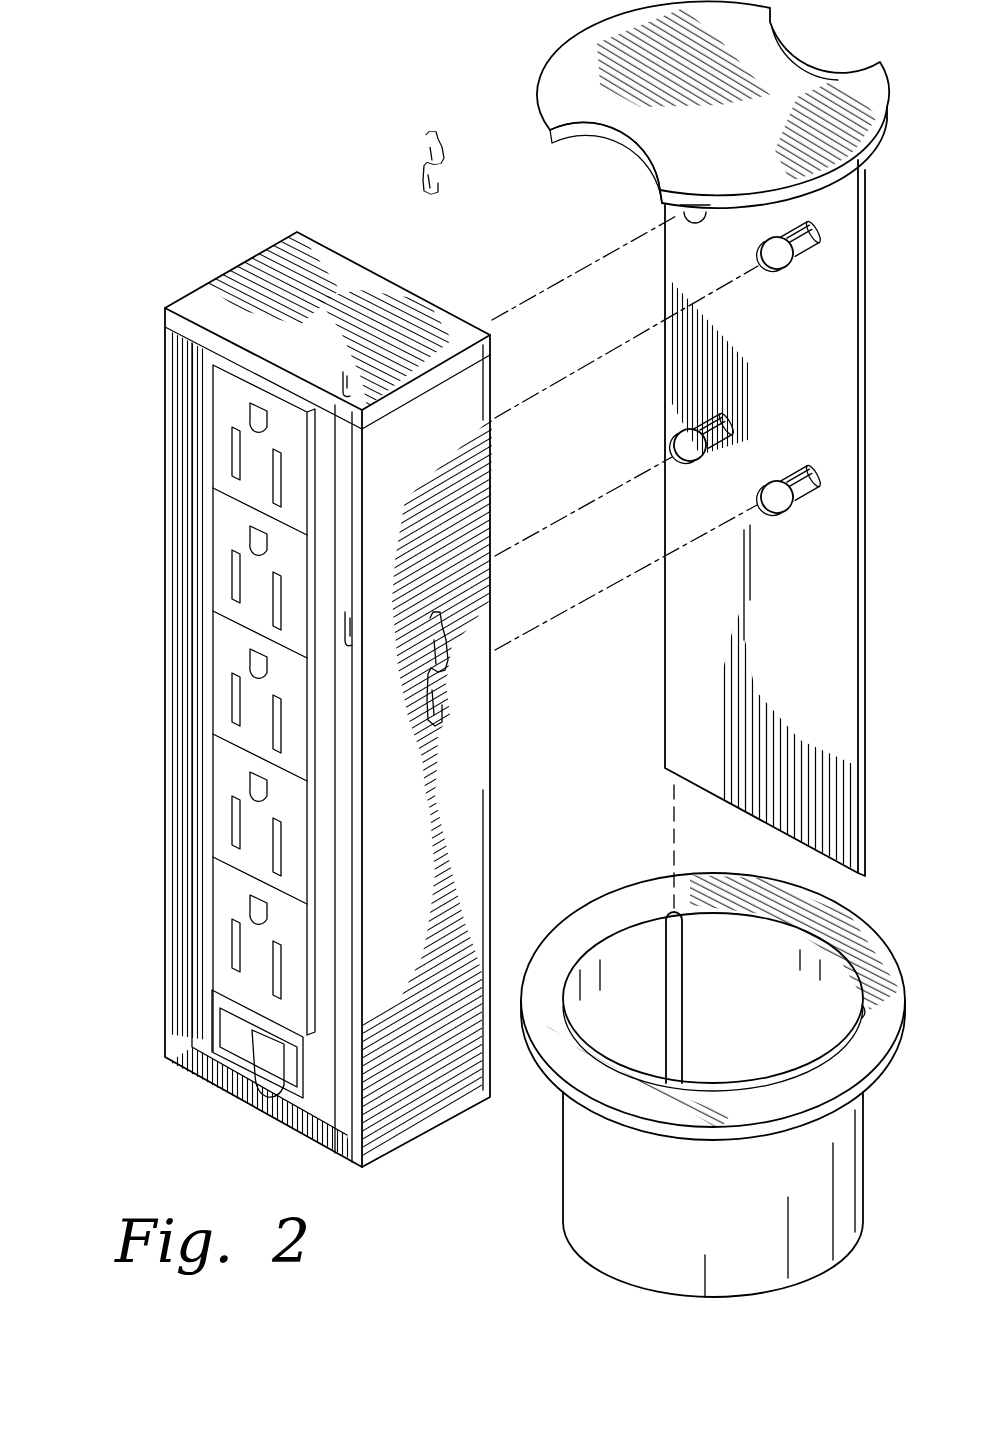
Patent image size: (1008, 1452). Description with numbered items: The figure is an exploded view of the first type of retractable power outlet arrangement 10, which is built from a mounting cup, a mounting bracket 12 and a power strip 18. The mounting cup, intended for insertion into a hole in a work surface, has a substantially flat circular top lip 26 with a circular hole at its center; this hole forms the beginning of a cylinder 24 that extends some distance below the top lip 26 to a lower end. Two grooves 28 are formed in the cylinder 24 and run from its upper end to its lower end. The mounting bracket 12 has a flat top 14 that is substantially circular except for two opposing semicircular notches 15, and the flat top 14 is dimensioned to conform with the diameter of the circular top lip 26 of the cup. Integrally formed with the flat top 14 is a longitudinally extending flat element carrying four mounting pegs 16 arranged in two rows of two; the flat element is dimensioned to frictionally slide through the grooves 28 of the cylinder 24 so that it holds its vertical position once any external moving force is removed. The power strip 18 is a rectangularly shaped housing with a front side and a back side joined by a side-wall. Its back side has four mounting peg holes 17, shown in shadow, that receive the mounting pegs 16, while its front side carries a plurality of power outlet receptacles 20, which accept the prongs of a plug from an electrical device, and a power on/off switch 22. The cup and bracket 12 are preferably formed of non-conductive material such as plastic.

The retractable power outlet arrangement 10 is at (186, 190).
The mounting bracket 12 is at (866, 312).
The flat top 14 is at (750, 37).
The semicircular notches 15 is at (633, 140).
The mounting pegs 16 is at (808, 223).
The mounting peg holes 17 is at (446, 702).
The power strip 18 is at (166, 452).
The power outlet receptacles 20 is at (221, 660).
The power on/off switch 22 is at (240, 1032).
The cylinder 24 is at (597, 1190).
The circular top lip 26 is at (588, 922).
The grooves 28 is at (673, 910).